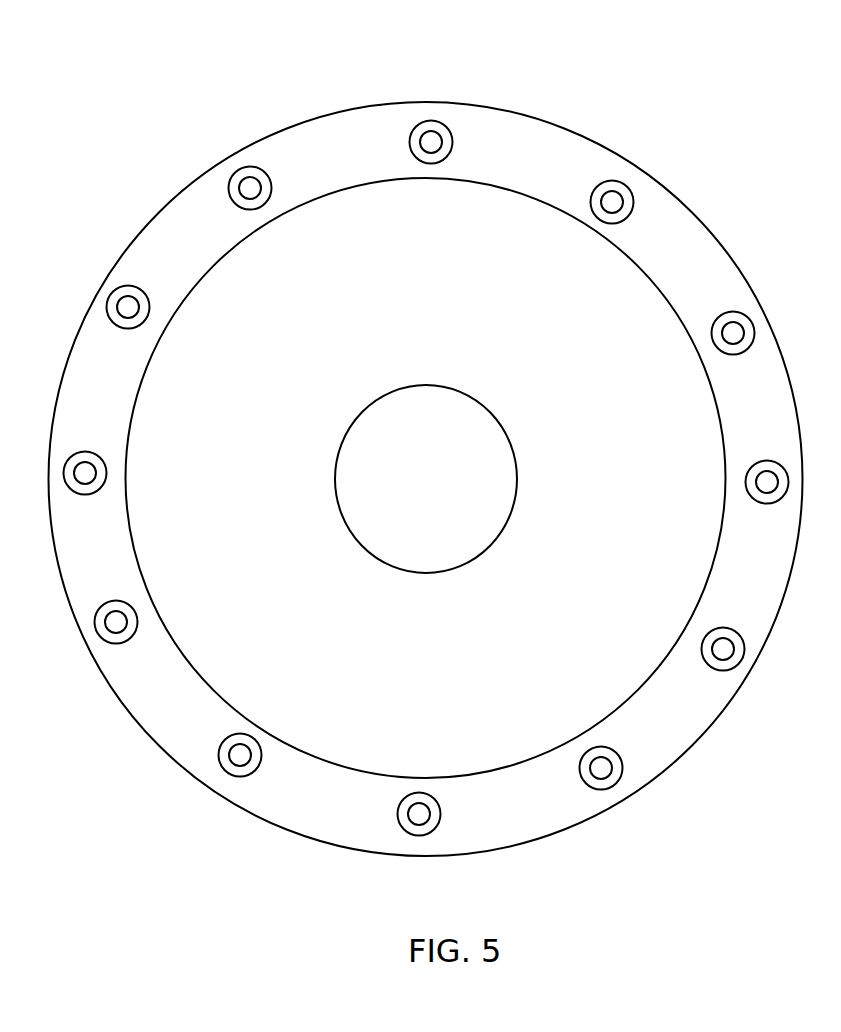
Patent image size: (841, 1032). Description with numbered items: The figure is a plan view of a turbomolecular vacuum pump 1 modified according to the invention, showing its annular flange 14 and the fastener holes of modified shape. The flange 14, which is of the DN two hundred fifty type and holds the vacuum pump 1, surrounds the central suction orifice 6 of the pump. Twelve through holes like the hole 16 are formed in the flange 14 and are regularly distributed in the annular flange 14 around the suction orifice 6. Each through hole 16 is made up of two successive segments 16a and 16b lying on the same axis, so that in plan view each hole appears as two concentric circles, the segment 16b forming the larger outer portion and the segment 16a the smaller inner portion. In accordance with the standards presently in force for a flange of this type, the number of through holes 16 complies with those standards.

The vacuum pump 1 is at (426, 461).
The suction orifice 6 is at (260, 302).
The flange 14 is at (707, 249).
The through hole 16 is at (403, 105).
The segment 16a is at (432, 145).
The segment 16b is at (411, 137).